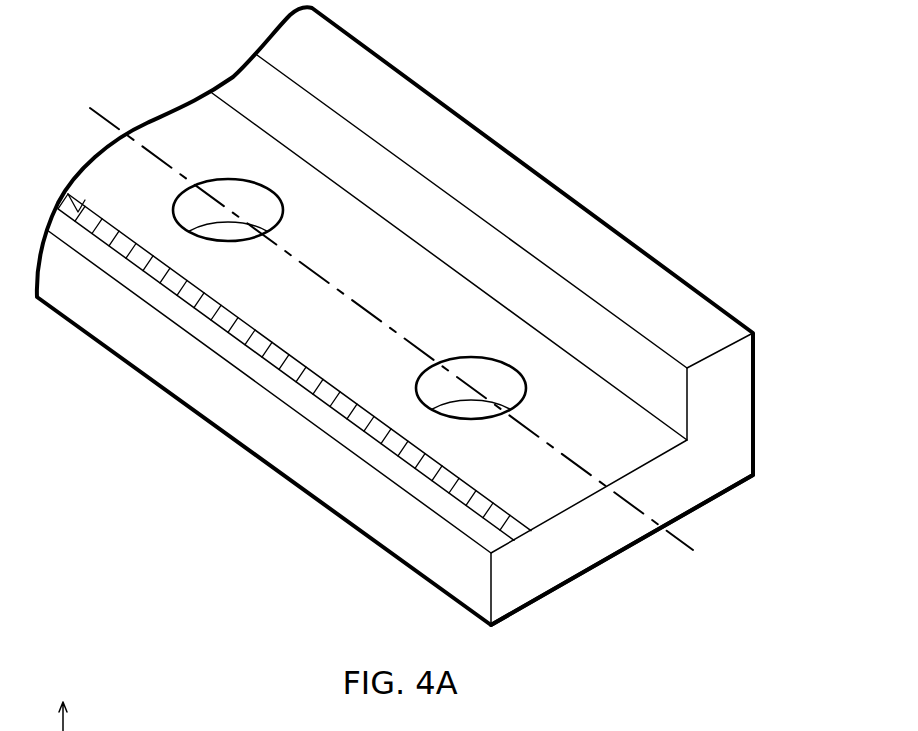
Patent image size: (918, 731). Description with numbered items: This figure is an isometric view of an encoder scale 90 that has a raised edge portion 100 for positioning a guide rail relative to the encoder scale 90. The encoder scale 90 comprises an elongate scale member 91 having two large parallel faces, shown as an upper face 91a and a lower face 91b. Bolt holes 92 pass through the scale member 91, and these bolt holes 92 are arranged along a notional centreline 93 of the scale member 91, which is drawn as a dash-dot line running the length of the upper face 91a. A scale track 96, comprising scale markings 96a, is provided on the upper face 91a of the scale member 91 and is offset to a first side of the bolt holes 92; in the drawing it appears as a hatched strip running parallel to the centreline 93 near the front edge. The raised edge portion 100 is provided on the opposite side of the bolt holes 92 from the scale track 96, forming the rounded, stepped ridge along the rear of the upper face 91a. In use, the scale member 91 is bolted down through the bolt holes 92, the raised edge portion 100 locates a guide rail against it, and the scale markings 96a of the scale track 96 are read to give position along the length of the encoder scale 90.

The encoder scale 90 is at (423, 325).
The elongate scale member 91 is at (715, 502).
The upper face 91a is at (643, 443).
The lower face 91b is at (583, 575).
The bolt holes 92 is at (272, 192).
The notional centreline 93 is at (683, 550).
The scale track 96 is at (108, 212).
The scale markings 96a is at (78, 200).
The raised edge portion 100 is at (460, 230).